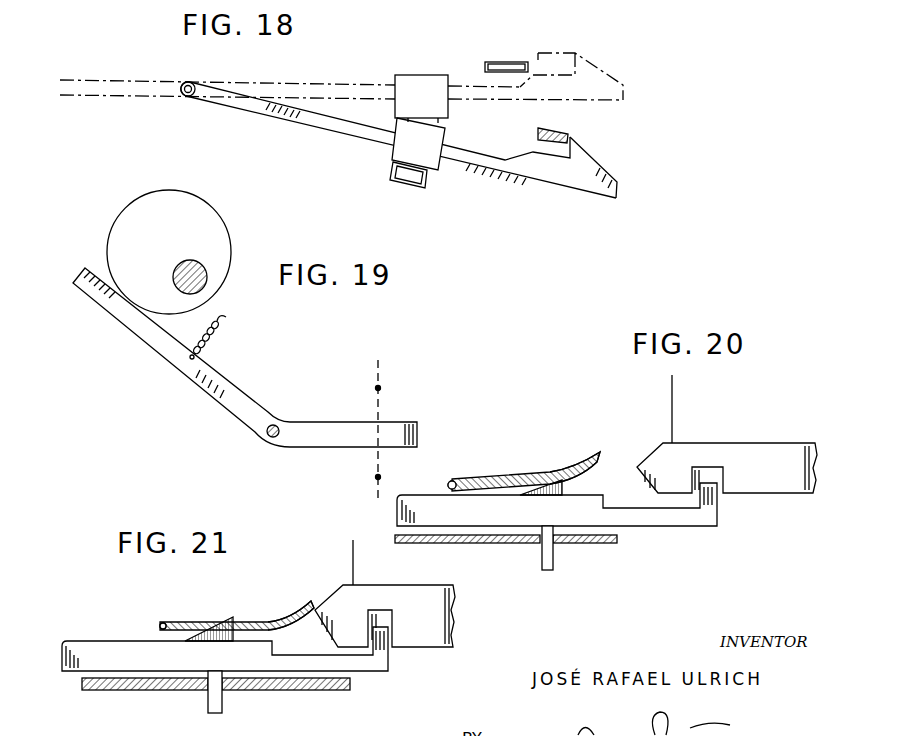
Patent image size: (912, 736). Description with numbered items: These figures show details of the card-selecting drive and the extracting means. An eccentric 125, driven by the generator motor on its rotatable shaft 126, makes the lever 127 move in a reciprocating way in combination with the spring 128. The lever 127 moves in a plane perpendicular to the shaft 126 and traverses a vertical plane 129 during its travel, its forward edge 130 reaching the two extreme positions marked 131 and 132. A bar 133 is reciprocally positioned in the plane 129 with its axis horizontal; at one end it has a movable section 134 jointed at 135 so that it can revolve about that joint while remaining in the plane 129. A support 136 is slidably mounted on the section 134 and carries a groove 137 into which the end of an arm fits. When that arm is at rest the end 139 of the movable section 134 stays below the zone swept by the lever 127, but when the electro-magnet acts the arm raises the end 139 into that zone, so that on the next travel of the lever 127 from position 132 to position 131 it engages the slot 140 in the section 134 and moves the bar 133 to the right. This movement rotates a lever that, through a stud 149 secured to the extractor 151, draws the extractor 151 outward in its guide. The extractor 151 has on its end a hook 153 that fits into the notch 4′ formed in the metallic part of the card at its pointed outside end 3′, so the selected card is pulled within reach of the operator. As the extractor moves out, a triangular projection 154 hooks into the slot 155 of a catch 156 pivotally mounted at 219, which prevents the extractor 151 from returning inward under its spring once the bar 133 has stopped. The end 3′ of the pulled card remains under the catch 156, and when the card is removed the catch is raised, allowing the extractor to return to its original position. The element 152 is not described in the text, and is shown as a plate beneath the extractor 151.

In FIG. 18, the bar 133 is at (92, 97).
In FIG. 18, the joint 135 is at (186, 101).
In FIG. 18, the movable section 134 is at (292, 122).
In FIG. 18, the support 136 is at (395, 148).
In FIG. 18, the groove 137 is at (420, 187).
In FIG. 18, the end of the movable section 139 is at (590, 188).
In FIG. 18, the slot 140 is at (570, 152).
In FIG. 18, the lever 127 is at (503, 62).
In FIG. 19, the lever 127 is at (212, 378).
In FIG. 19, the eccentric 125 is at (233, 199).
In FIG. 19, the rotatable shaft 126 is at (207, 277).
In FIG. 19, the spring 128 is at (218, 331).
In FIG. 19, the vertical plane 129 is at (381, 374).
In FIG. 19, the forward edge 130 is at (418, 432).
In FIG. 19, the extreme position 131 is at (380, 388).
In FIG. 19, the extreme position 132 is at (380, 477).
In FIG. 20, the extractor 151 is at (402, 511).
In FIG. 21, the extractor 151 is at (96, 650).
In FIG. 20, the plate 152 is at (435, 544).
In FIG. 21, the plate 152 is at (120, 693).
In FIG. 20, the stud 149 is at (547, 564).
In FIG. 21, the stud 149 is at (222, 703).
In FIG. 20, the hook 153 is at (708, 500).
In FIG. 21, the hook 153 is at (387, 652).
In FIG. 20, the triangular projection 154 is at (562, 486).
In FIG. 21, the triangular projection 154 is at (232, 618).
In FIG. 20, the slot 155 is at (530, 472).
In FIG. 21, the slot 155 is at (206, 621).
In FIG. 20, the catch 156 is at (598, 453).
In FIG. 21, the catch 156 is at (310, 604).
In FIG. 20, the pivot 219 is at (452, 481).
In FIG. 21, the pivot 219 is at (160, 621).
In FIG. 20, the outside end 3′ is at (665, 460).
In FIG. 21, the outside end 3′ is at (337, 617).
In FIG. 20, the notch 4′ is at (717, 475).
In FIG. 21, the notch 4′ is at (382, 620).